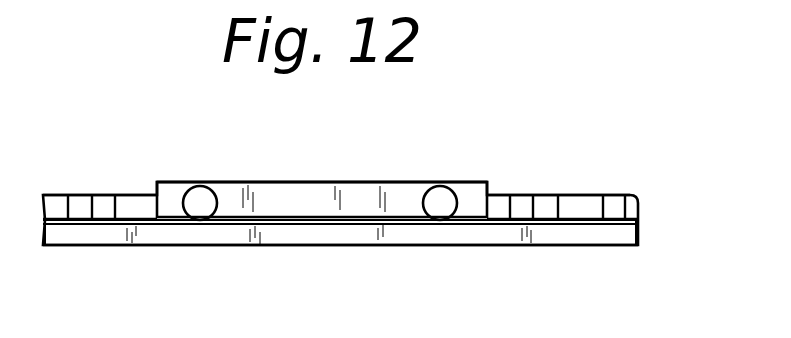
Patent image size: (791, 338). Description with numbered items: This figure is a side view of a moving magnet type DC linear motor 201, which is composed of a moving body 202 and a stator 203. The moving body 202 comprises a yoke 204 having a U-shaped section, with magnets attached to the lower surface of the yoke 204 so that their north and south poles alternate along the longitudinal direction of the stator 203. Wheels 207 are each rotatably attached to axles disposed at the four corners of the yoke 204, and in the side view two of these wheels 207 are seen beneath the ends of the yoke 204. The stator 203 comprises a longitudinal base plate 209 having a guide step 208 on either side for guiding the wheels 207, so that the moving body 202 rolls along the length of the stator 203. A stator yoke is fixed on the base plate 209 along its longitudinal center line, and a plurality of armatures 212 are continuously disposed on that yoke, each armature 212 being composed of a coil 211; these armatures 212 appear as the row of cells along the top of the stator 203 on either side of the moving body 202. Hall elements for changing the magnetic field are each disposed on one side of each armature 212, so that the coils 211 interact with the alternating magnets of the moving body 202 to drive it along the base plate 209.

The moving magnet type DC linear motor 201 is at (660, 142).
The moving body 202 is at (375, 181).
The stator 203 is at (502, 245).
The yoke 204 is at (317, 187).
The wheels 207 is at (198, 186).
The guide step 208 is at (597, 221).
The base plate 209 is at (547, 236).
The coil 211 is at (550, 190).
The armatures 212 is at (633, 190).